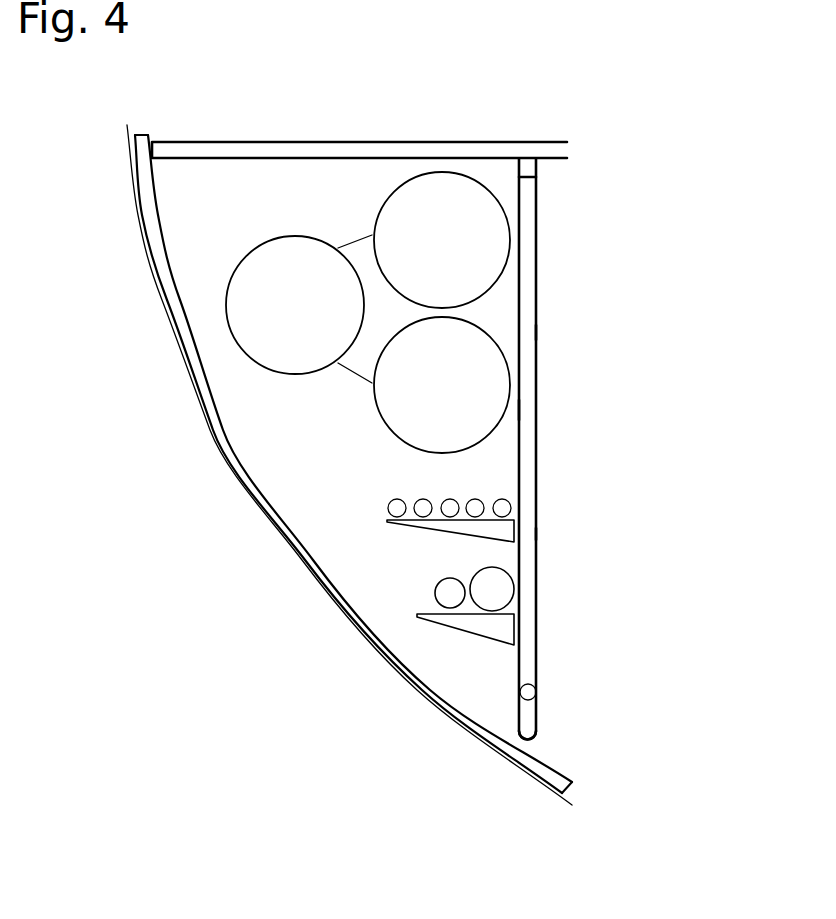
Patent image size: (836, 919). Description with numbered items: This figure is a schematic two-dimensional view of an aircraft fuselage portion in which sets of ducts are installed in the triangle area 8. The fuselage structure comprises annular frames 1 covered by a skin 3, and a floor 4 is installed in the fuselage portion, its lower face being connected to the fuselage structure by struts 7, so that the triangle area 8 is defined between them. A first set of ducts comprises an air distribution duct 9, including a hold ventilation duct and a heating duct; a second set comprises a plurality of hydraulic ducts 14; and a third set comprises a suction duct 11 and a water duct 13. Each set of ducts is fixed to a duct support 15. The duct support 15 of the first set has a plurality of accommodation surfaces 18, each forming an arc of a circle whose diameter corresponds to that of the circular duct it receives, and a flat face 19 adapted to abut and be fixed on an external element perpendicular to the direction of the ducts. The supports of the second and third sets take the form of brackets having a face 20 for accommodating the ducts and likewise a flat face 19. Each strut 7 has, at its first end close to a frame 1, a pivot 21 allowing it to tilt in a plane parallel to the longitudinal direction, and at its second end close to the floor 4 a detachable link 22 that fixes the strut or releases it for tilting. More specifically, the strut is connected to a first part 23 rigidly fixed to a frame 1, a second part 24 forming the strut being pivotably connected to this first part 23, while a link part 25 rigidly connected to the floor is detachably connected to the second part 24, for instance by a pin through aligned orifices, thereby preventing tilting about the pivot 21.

The annular frame 1 is at (349, 465).
The skin 3 is at (310, 454).
The floor 4 is at (359, 115).
The strut 7 is at (592, 396).
The triangle area 8 is at (129, 262).
The air distribution duct 9 is at (359, 334).
The suction duct 11 is at (593, 600).
The water duct 13 is at (337, 634).
The hydraulic duct 14 is at (596, 492).
The duct support 15 is at (579, 560).
The accommodation surface 18 is at (419, 396).
The flat face 19 is at (650, 448).
The duct accommodating face 20 is at (483, 549).
The pivot 21 is at (611, 705).
The detachable link 22 is at (588, 169).
The first part 23 is at (605, 759).
The second part 24 is at (613, 466).
The link part 25 is at (544, 398).